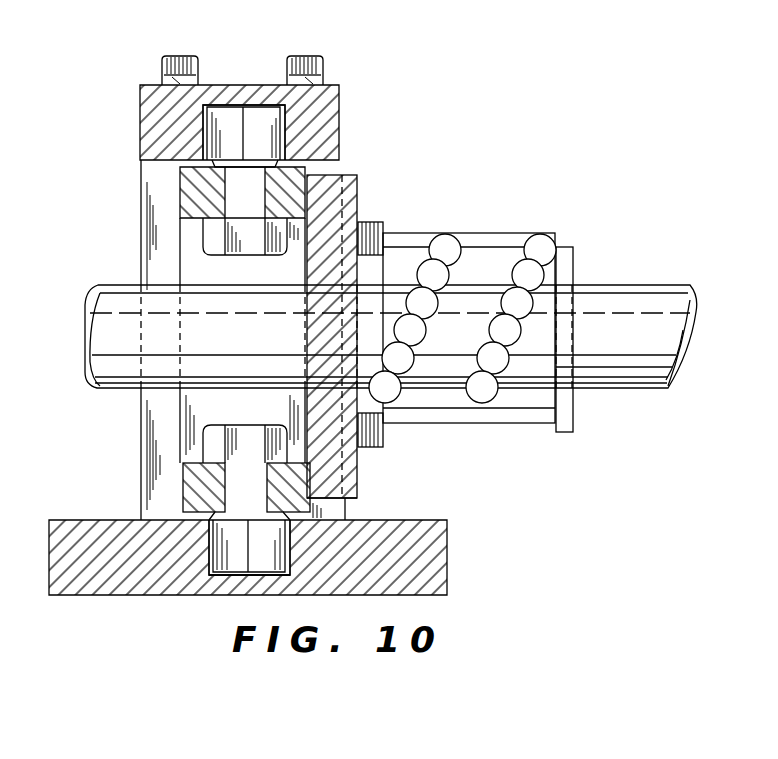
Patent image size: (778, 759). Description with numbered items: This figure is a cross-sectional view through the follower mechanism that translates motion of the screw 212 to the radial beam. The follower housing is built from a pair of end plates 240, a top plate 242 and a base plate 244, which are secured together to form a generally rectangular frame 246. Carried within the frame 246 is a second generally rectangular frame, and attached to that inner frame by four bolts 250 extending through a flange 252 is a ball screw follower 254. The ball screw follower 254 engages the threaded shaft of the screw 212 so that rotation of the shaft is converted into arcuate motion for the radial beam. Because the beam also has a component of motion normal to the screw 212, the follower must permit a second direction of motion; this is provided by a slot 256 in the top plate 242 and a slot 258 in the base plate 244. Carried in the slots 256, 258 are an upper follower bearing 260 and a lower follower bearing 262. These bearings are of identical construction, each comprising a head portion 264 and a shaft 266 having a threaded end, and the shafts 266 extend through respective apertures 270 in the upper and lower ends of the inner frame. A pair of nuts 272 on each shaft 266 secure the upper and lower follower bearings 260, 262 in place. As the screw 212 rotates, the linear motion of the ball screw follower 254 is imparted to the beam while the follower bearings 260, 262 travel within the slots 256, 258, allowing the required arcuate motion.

The screw 212 is at (622, 286).
The end plates 240 is at (143, 472).
The top plate 242 is at (140, 124).
The base plate 244 is at (186, 596).
The frame 246 is at (136, 208).
The bolts 250 is at (376, 223).
The flange 252 is at (357, 184).
The ball screw follower 254 is at (476, 233).
The slot 256 is at (267, 107).
The slot 258 is at (291, 567).
The upper follower bearing 260 is at (224, 110).
The lower follower bearing 262 is at (293, 548).
The head portion 264 is at (214, 545).
The shaft 266 is at (238, 501).
The apertures 270 is at (258, 503).
The nuts 272 is at (265, 258).